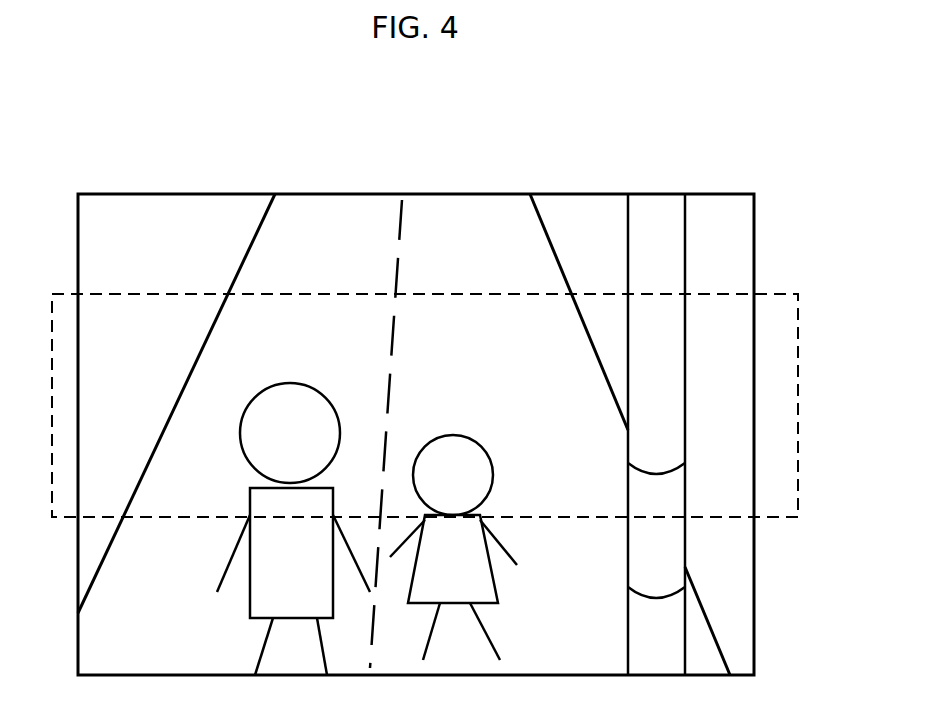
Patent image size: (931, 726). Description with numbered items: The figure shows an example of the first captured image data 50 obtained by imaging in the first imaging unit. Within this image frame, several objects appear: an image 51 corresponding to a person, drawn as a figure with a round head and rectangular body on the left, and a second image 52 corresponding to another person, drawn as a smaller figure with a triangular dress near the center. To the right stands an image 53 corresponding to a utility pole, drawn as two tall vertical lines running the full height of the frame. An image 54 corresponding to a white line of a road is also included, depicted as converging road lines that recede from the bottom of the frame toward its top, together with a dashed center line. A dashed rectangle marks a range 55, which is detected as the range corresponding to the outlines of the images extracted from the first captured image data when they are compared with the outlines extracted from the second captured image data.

The first captured image data 50 is at (415, 194).
The image corresponding to a person 51 is at (290, 384).
The image corresponding to a person 52 is at (453, 435).
The image corresponding to a utility pole 53 is at (668, 400).
The image corresponding to a white line of a road 54 is at (548, 245).
The range 55 is at (782, 293).